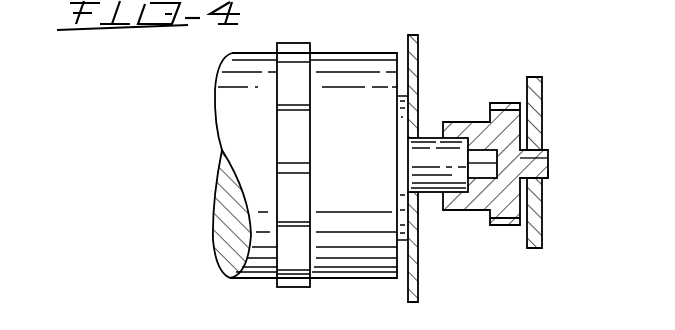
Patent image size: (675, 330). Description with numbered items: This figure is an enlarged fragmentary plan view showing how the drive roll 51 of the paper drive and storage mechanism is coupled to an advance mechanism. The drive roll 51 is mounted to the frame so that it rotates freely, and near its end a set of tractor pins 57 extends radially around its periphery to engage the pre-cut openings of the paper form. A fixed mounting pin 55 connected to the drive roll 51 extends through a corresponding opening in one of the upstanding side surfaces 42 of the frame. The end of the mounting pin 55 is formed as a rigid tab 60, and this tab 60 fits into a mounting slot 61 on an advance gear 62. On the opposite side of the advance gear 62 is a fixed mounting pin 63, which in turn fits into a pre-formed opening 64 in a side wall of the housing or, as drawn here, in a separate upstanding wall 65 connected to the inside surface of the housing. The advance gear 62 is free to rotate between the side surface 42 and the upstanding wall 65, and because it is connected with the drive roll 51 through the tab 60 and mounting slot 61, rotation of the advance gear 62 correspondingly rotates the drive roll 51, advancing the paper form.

The upstanding side surface 42 is at (418, 42).
The drive roll 51 is at (352, 276).
The fixed mounting pin 55 is at (432, 138).
The tractor pins 57 is at (290, 284).
The rigid tab 60 is at (480, 212).
The mounting slot 61 is at (480, 122).
The advance gear 62 is at (506, 103).
The fixed mounting pin 63 is at (548, 154).
The pre-formed opening 64 is at (546, 172).
The upstanding wall 65 is at (538, 100).